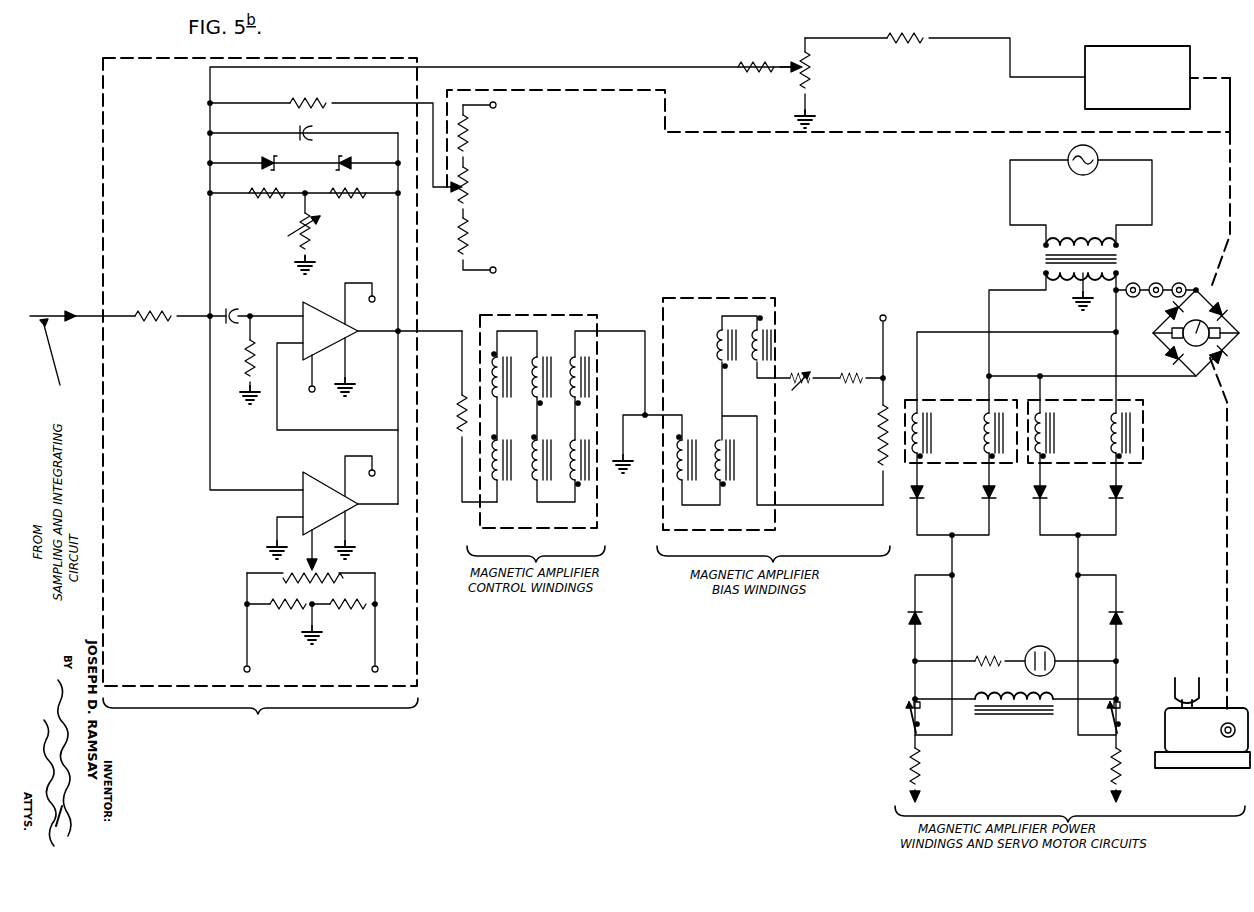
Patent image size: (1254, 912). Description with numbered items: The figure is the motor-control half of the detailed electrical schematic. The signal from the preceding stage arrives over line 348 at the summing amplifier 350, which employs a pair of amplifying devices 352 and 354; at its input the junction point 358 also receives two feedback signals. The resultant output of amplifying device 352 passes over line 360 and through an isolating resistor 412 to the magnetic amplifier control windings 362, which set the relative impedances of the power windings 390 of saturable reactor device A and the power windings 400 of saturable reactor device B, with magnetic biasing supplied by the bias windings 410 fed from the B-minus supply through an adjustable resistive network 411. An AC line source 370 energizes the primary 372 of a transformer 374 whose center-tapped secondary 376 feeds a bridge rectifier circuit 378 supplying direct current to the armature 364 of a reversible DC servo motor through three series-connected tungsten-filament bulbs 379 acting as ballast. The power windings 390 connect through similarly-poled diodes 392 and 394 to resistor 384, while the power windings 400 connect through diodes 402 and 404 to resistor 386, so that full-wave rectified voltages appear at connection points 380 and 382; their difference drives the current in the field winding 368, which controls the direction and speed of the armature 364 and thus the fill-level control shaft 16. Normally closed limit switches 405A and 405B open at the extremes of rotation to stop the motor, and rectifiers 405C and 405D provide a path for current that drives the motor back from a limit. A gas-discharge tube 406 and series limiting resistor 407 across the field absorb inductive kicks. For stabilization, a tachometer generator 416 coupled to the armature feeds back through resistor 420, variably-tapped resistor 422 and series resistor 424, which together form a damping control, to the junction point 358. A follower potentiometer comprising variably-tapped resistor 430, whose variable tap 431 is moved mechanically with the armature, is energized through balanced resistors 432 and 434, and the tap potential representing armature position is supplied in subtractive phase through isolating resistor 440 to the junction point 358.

The fill-level control shaft 16 is at (1222, 732).
The line 348 is at (42, 320).
The summing amplifier 350 is at (413, 395).
The amplifying device 352 is at (320, 297).
The amplifying device 354 is at (318, 467).
The junction point 358 is at (210, 318).
The line 360 is at (432, 325).
The magnetic amplifier control windings 362 is at (530, 315).
The armature 364 is at (1202, 348).
The field winding 368 is at (1018, 698).
The AC line source 370 is at (1083, 175).
The primary 372 is at (1077, 242).
The transformer 374 is at (1120, 258).
The center-tapped secondary 376 is at (1060, 278).
The bridge rectifier circuit 378 is at (1198, 282).
The tungsten-filament bulbs 379 is at (1140, 283).
The connection point 380 is at (912, 700).
The connection point 382 is at (1118, 700).
The resistor 384 is at (910, 771).
The resistor 386 is at (1111, 771).
The power windings 390 is at (928, 412).
The diode 392 is at (921, 504).
The diode 394 is at (987, 496).
The power windings 400 is at (1055, 412).
The diode 402 is at (1045, 504).
The diode 404 is at (1119, 506).
The limit switch 405A is at (908, 706).
The limit switch 405B is at (1119, 714).
The rectifier 405C is at (906, 618).
The rectifier 405D is at (1128, 618).
The gas-discharge tube 406 is at (1040, 646).
The series limiting resistor 407 is at (990, 648).
The bias windings 410 is at (722, 298).
The adjustable resistive network 411 is at (877, 441).
The isolating resistor 412 is at (455, 420).
The tachometer generator 416 is at (1160, 46).
The resistor 420 is at (906, 40).
The variably-tapped resistor 422 is at (811, 74).
The series resistor 424 is at (756, 54).
The variably-tapped resistor 430 is at (468, 191).
The variable tap 431 is at (448, 197).
The resistor 432 is at (468, 139).
The resistor 434 is at (468, 240).
The isolating resistor 440 is at (309, 103).